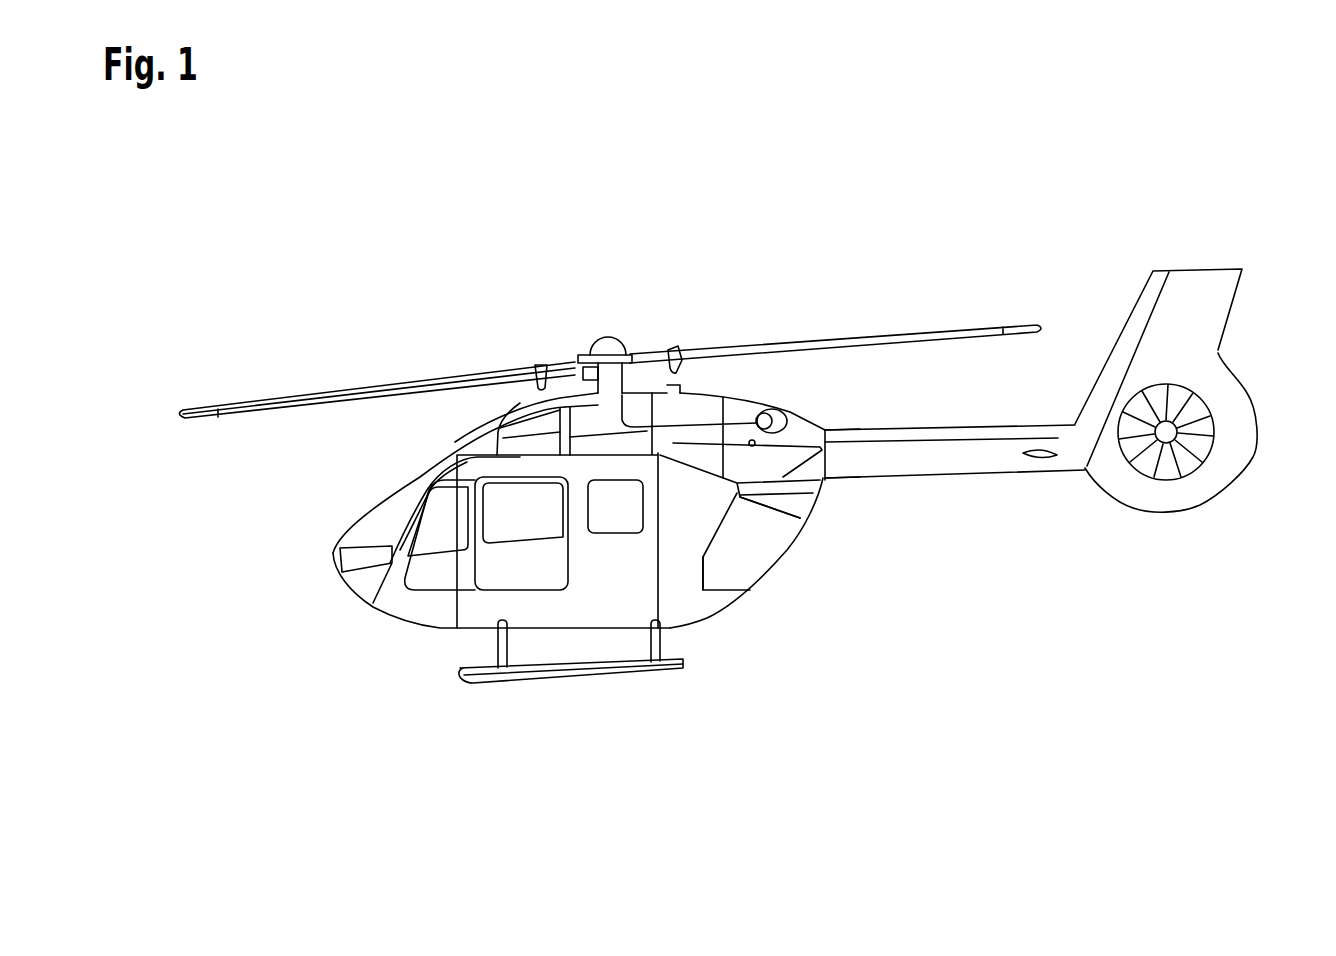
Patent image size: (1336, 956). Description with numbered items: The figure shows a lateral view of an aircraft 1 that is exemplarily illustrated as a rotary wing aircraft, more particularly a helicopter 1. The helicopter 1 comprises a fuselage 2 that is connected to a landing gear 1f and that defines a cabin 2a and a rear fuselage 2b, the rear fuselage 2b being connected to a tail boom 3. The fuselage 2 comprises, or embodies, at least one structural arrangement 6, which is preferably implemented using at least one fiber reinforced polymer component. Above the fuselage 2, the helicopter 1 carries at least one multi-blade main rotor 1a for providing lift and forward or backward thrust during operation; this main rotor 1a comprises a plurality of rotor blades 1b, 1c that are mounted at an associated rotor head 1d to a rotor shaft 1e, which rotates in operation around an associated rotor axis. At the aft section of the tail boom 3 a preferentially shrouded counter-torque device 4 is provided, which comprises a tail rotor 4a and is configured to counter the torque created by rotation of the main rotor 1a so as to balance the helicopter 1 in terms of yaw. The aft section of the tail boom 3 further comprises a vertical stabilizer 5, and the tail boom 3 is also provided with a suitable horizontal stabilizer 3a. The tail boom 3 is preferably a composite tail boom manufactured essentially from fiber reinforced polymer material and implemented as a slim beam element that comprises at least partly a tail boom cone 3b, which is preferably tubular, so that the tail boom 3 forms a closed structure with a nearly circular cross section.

The aircraft 1 is at (478, 246).
The multi-blade main rotor 1a is at (405, 368).
The rotor blade 1b is at (203, 410).
The rotor blade 1c is at (1013, 330).
The rotor head 1d is at (625, 348).
The rotor shaft 1e is at (520, 403).
The landing gear 1f is at (573, 675).
The fuselage 2 is at (678, 582).
The cabin 2a is at (438, 536).
The rear fuselage 2b is at (822, 497).
The tail boom 3 is at (960, 453).
The horizontal stabilizer 3a is at (1040, 460).
The tail boom cone 3b is at (878, 425).
The counter-torque device 4 is at (1217, 404).
The tail rotor 4a is at (1163, 463).
The vertical stabilizer 5 is at (1200, 290).
The structural arrangement 6 is at (631, 569).